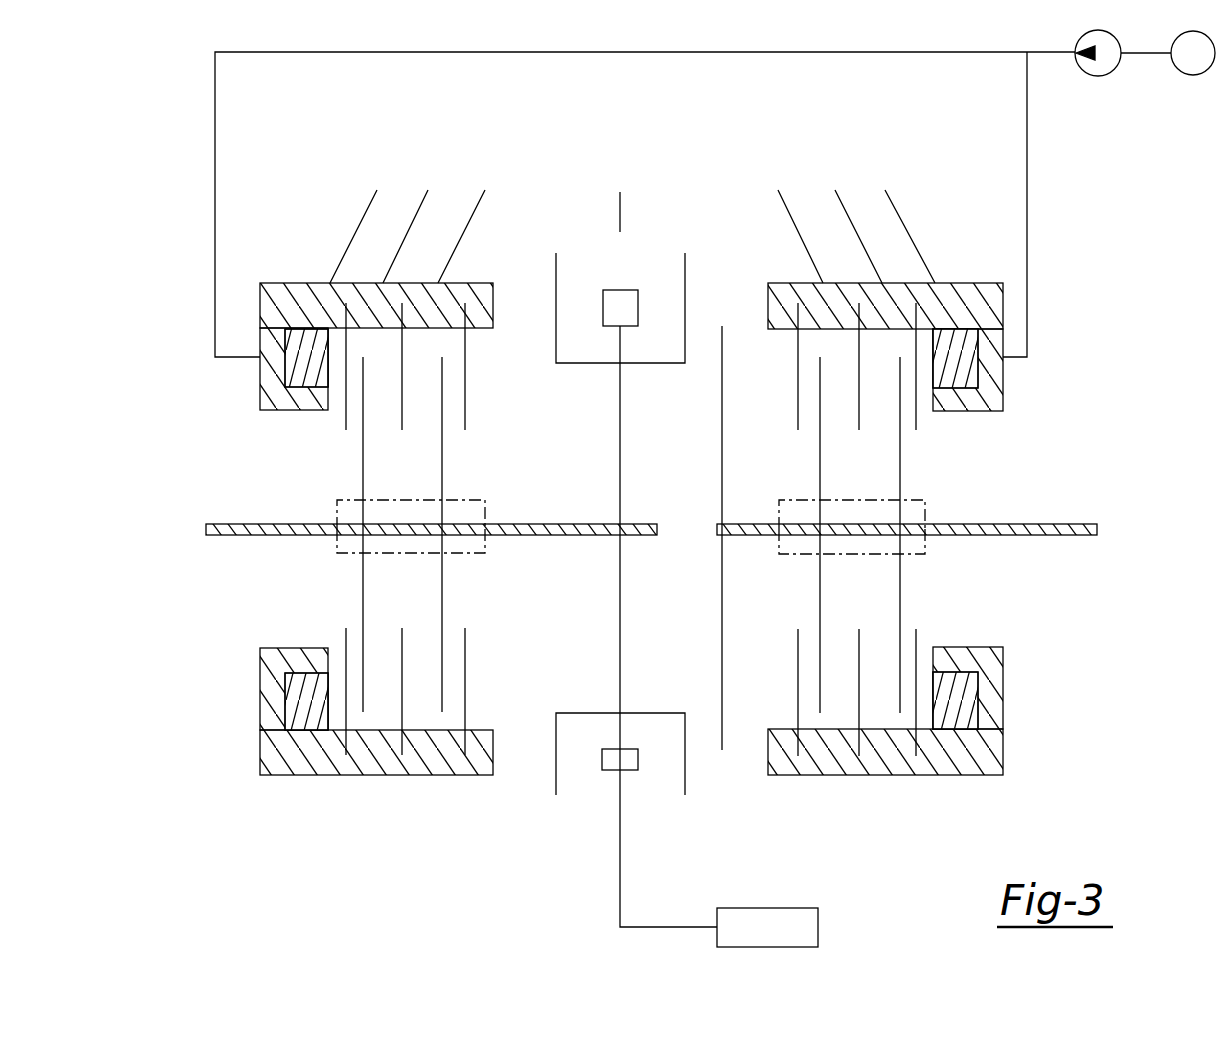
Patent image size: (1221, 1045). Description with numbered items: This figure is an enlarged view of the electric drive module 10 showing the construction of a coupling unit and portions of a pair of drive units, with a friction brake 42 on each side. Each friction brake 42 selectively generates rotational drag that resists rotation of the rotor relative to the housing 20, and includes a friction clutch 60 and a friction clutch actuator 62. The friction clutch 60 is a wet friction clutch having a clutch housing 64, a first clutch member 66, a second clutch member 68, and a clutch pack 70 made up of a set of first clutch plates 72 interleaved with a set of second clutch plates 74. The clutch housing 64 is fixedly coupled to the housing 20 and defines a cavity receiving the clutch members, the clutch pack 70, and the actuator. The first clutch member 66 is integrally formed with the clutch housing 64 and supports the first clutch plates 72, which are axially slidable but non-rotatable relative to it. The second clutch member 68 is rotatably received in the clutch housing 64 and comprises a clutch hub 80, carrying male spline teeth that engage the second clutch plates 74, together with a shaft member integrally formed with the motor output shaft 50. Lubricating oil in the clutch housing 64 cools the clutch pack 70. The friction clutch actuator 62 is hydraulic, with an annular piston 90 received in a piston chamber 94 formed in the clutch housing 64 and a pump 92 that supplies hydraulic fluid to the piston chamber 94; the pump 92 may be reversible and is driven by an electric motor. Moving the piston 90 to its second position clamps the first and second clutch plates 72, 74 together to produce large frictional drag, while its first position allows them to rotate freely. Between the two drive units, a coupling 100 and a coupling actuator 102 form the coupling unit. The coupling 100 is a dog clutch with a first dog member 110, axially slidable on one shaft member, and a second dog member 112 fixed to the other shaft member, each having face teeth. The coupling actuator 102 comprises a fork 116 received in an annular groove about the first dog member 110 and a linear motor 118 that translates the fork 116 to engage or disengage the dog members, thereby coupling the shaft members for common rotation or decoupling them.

The electric drive module 10 is at (212, 777).
The housing 20 is at (855, 228).
The friction brake 42 is at (375, 867).
The motor output shaft 50 is at (213, 527).
The friction clutch 60 is at (390, 752).
The friction clutch actuator 62 is at (307, 740).
The clutch housing 64 is at (313, 295).
The first clutch member 66 is at (452, 295).
The second clutch member 68 is at (477, 508).
The clutch pack 70 is at (217, 428).
The first clutch plates 72 is at (346, 418).
The second clutch plates 74 is at (363, 457).
The clutch hub 80 is at (347, 543).
The annular piston 90 is at (292, 378).
The pump 92 is at (1098, 76).
The piston chamber 94 is at (287, 347).
The coupling 100 is at (618, 598).
The coupling actuator 102 is at (636, 892).
The first dog member 110 is at (620, 436).
The second dog member 112 is at (728, 567).
The fork 116 is at (620, 847).
The linear motor 118 is at (818, 930).